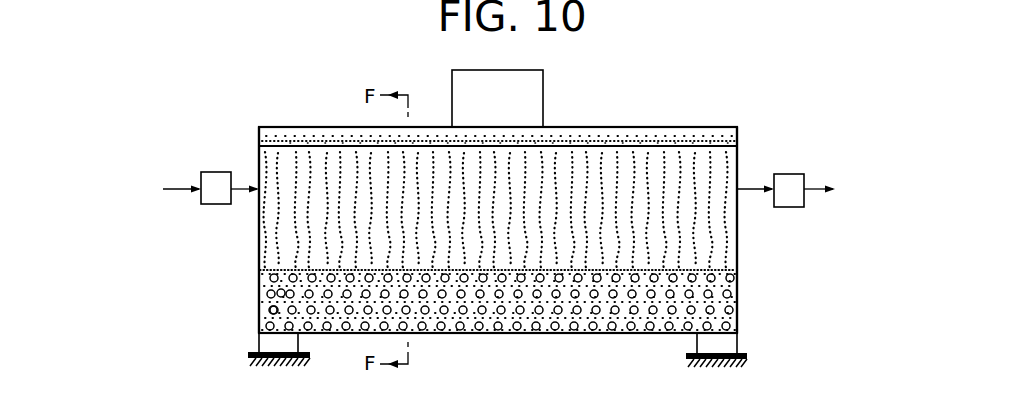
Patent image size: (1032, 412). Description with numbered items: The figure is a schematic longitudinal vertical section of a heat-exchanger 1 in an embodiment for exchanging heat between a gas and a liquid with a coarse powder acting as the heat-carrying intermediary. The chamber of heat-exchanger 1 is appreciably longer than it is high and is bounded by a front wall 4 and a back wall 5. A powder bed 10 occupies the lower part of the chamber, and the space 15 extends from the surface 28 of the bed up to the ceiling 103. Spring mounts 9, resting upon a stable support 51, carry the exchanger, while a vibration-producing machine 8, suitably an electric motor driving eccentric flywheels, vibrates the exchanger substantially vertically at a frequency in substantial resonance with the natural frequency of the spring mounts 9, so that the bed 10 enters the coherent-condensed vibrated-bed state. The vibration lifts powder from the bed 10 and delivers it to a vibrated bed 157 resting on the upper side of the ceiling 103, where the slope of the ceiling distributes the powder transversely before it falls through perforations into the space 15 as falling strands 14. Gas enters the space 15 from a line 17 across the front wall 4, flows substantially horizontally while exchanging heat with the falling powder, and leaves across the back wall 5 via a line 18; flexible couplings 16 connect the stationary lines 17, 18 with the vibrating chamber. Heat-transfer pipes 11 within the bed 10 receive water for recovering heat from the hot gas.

The heat-exchanger 1 is at (646, 91).
The front wall 4 is at (259, 152).
The back wall 5 is at (740, 264).
The vibration-producing machine 8 is at (543, 76).
The spring mounts 9 is at (298, 348).
The powder bed 10 is at (728, 302).
The heat-transfer pipes 11 is at (280, 292).
The strands 14 is at (440, 236).
The space 15 is at (577, 230).
The flexible couplings 16 is at (222, 172).
The line 17 is at (176, 190).
The line 18 is at (811, 190).
The surface of bed 28 is at (688, 245).
The stable support 51 is at (255, 350).
The ceiling 103 is at (718, 156).
The vibrated bed 157 is at (322, 141).